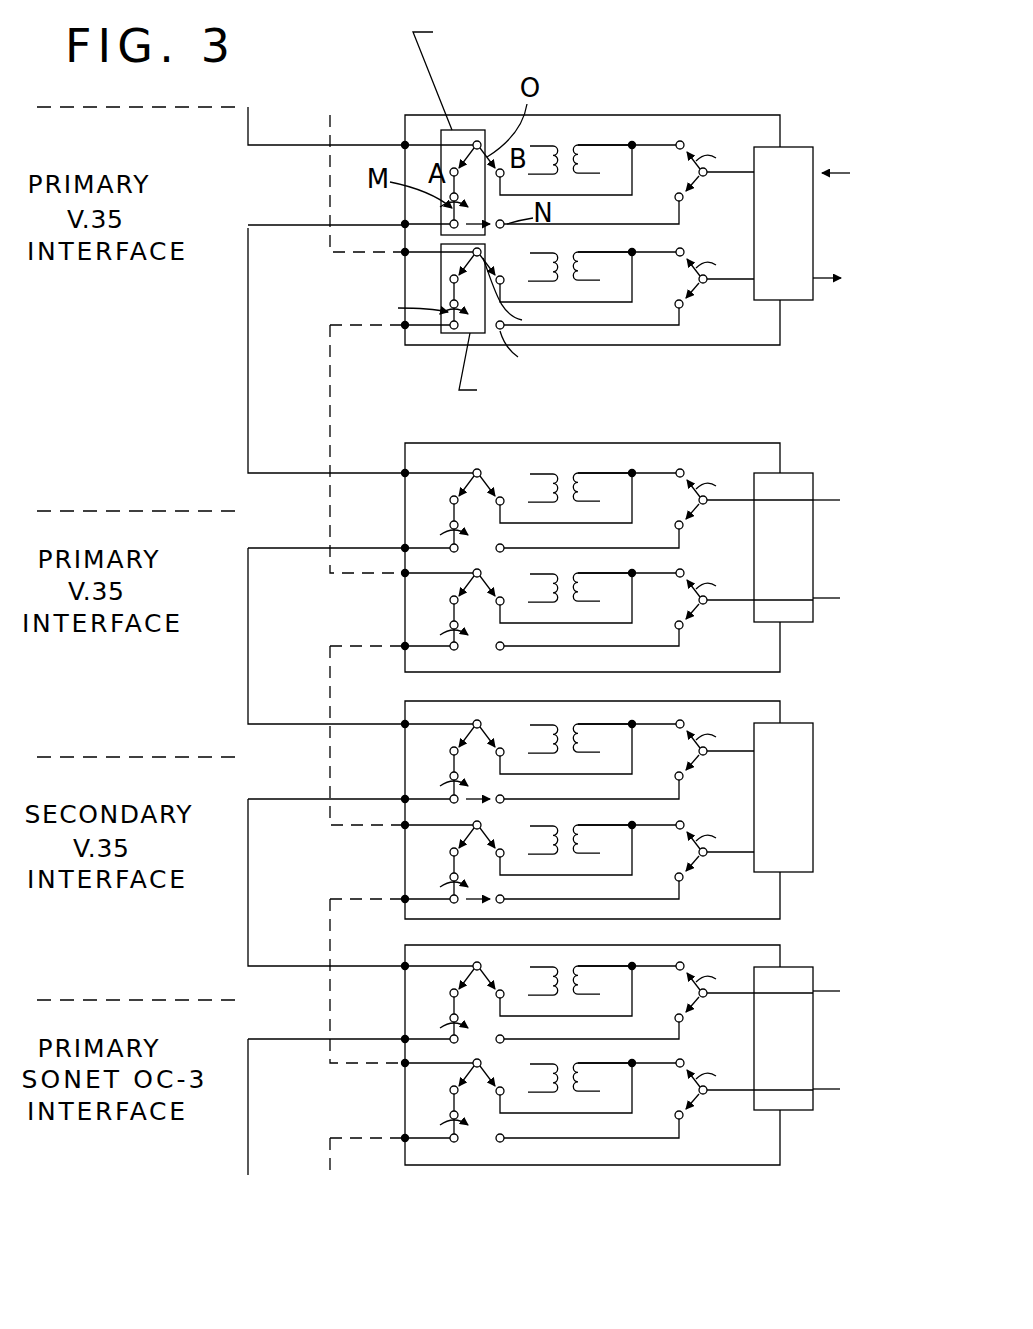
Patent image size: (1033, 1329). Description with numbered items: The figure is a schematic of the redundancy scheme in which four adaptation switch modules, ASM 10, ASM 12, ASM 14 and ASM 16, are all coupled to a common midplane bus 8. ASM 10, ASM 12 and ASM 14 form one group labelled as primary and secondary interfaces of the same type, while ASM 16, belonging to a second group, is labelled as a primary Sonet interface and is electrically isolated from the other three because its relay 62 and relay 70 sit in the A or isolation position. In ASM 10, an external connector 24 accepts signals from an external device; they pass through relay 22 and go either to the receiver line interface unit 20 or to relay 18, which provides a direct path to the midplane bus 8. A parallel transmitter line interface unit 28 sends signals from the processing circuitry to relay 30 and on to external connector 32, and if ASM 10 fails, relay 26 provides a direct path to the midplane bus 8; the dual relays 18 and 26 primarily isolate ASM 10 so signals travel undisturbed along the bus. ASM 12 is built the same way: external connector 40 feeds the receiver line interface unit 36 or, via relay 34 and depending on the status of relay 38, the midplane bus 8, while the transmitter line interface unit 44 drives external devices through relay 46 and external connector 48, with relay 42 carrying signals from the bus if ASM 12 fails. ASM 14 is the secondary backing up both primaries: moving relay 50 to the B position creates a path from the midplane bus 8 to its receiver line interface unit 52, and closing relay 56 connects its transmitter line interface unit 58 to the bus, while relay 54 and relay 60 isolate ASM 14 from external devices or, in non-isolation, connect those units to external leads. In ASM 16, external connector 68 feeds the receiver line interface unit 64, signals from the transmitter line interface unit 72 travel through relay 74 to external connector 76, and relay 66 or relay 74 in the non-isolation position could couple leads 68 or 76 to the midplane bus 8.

The midplane bus 8 is at (248, 225).
The ASM 10 is at (713, 270).
The ASM 12 is at (727, 560).
The ASM 14 is at (735, 795).
The ASM 16 is at (725, 1038).
The relay 18 is at (490, 112).
The receiver line interface unit 20 is at (553, 147).
The relay 22 is at (712, 162).
The external connector 24 is at (850, 172).
The relay 26 is at (478, 258).
The transmitter line interface unit 28 is at (600, 300).
The relay 30 is at (708, 282).
The external connector 32 is at (810, 282).
The relay 34 is at (465, 470).
The receiver line interface unit 36 is at (567, 475).
The relay 38 is at (705, 503).
The external connector 40 is at (825, 497).
The relay 42 is at (462, 573).
The transmitter line interface unit 44 is at (600, 600).
The relay 46 is at (700, 600).
The external connector 48 is at (835, 597).
The relay 50 is at (465, 722).
The receiver line interface unit 52 is at (578, 723).
The relay 54 is at (713, 745).
The relay 56 is at (455, 850).
The transmitter line interface unit 58 is at (600, 855).
The relay 60 is at (706, 852).
The relay 62 is at (500, 985).
The receiver line interface unit 64 is at (578, 966).
The relay 66 is at (710, 990).
The external connector 68 is at (832, 989).
The relay 70 is at (460, 1090).
The transmitter line interface unit 72 is at (600, 1087).
The relay 74 is at (682, 1098).
The external connector 76 is at (830, 1088).